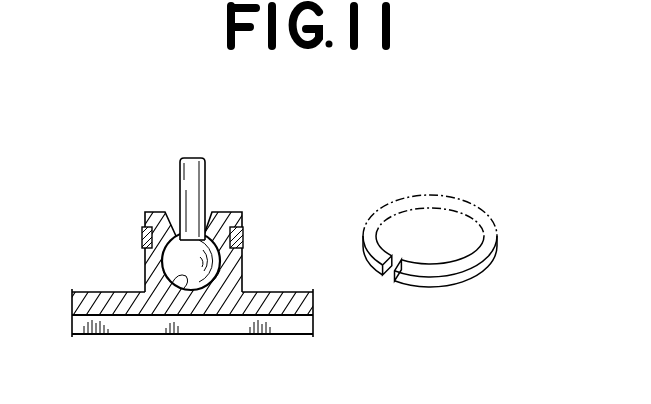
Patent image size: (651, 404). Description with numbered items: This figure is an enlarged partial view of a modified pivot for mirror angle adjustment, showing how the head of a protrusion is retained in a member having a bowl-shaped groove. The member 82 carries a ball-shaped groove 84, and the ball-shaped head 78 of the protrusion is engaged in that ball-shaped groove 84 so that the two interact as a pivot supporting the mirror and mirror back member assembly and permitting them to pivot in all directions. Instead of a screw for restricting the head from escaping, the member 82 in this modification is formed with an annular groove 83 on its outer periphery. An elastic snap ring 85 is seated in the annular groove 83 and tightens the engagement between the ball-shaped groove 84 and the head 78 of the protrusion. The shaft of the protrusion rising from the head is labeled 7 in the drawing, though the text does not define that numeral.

The rod 7 is at (203, 190).
The ball-shaped head 78 is at (198, 270).
The member 82 is at (157, 267).
The annular groove 83 is at (159, 222).
The ball-shaped groove 84 is at (188, 284).
The elastic snap ring 85 is at (245, 240).